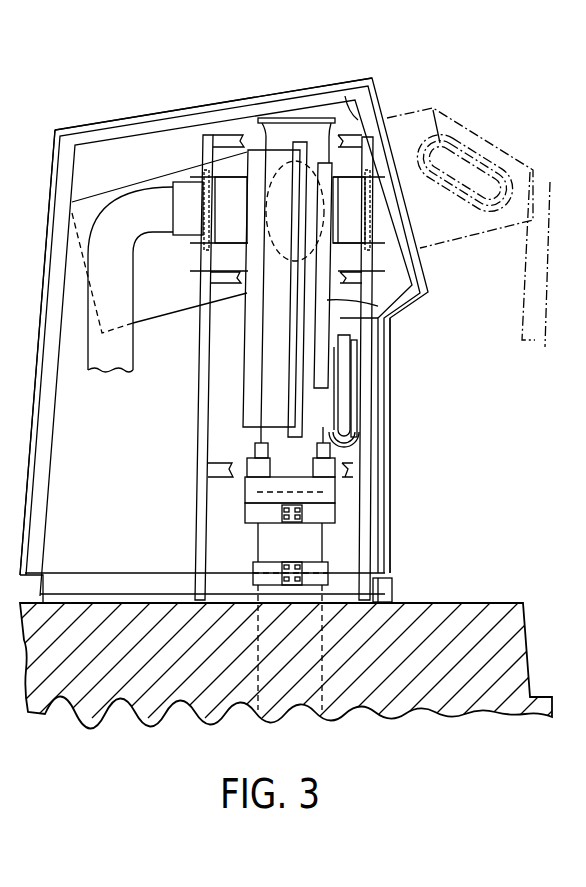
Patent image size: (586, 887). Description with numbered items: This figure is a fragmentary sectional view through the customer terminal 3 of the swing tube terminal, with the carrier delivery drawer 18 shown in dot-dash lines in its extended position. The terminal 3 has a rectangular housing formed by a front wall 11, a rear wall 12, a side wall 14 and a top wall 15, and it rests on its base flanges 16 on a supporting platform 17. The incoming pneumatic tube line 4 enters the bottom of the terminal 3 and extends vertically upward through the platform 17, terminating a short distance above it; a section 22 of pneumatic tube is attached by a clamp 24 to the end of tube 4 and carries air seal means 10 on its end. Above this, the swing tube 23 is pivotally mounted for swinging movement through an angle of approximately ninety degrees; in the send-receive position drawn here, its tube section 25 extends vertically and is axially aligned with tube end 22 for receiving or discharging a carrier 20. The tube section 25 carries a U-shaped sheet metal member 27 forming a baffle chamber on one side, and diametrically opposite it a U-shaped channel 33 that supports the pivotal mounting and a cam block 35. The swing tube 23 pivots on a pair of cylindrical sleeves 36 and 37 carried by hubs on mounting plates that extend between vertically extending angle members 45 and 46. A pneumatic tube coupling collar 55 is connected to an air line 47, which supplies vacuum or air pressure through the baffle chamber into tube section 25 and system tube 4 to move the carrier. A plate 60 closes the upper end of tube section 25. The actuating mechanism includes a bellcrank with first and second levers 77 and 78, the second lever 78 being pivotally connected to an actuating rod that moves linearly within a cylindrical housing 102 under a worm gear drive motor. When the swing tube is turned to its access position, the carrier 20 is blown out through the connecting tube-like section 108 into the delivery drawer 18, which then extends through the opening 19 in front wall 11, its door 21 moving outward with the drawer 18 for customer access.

The customer terminal 3 is at (194, 98).
The pneumatic tube line 4 is at (328, 678).
The air seal means 10 is at (247, 493).
The front wall 11 is at (390, 378).
The rear wall 12 is at (37, 335).
The side wall 14 is at (1, 258).
The top wall 15 is at (217, 103).
The base flanges 16 is at (380, 590).
The supporting platform 17 is at (480, 610).
The carrier delivery drawer 18 is at (449, 108).
The opening 19 is at (358, 124).
The carrier 20 is at (487, 153).
The door 21 is at (541, 277).
The section of pneumatic tube 22 is at (313, 547).
The swing tube 23 is at (237, 403).
The clamp 24 is at (252, 567).
The tube section 25 is at (268, 433).
The U-shaped sheet metal member 27 is at (252, 342).
The U-shaped channel 33 is at (327, 306).
The cam block 35 is at (340, 325).
The cylindrical sleeve 36 is at (352, 193).
The cylindrical sleeve 37 is at (227, 230).
The angle member 45 is at (362, 497).
The angle member 46 is at (203, 353).
The air line 47 is at (121, 213).
The pneumatic tube coupling collar 55 is at (185, 193).
The plate 60 is at (280, 117).
The first lever 77 is at (347, 358).
The second lever 78 is at (355, 415).
The cylindrical housing 102 is at (357, 455).
The connecting tube-like section 108 is at (284, 165).